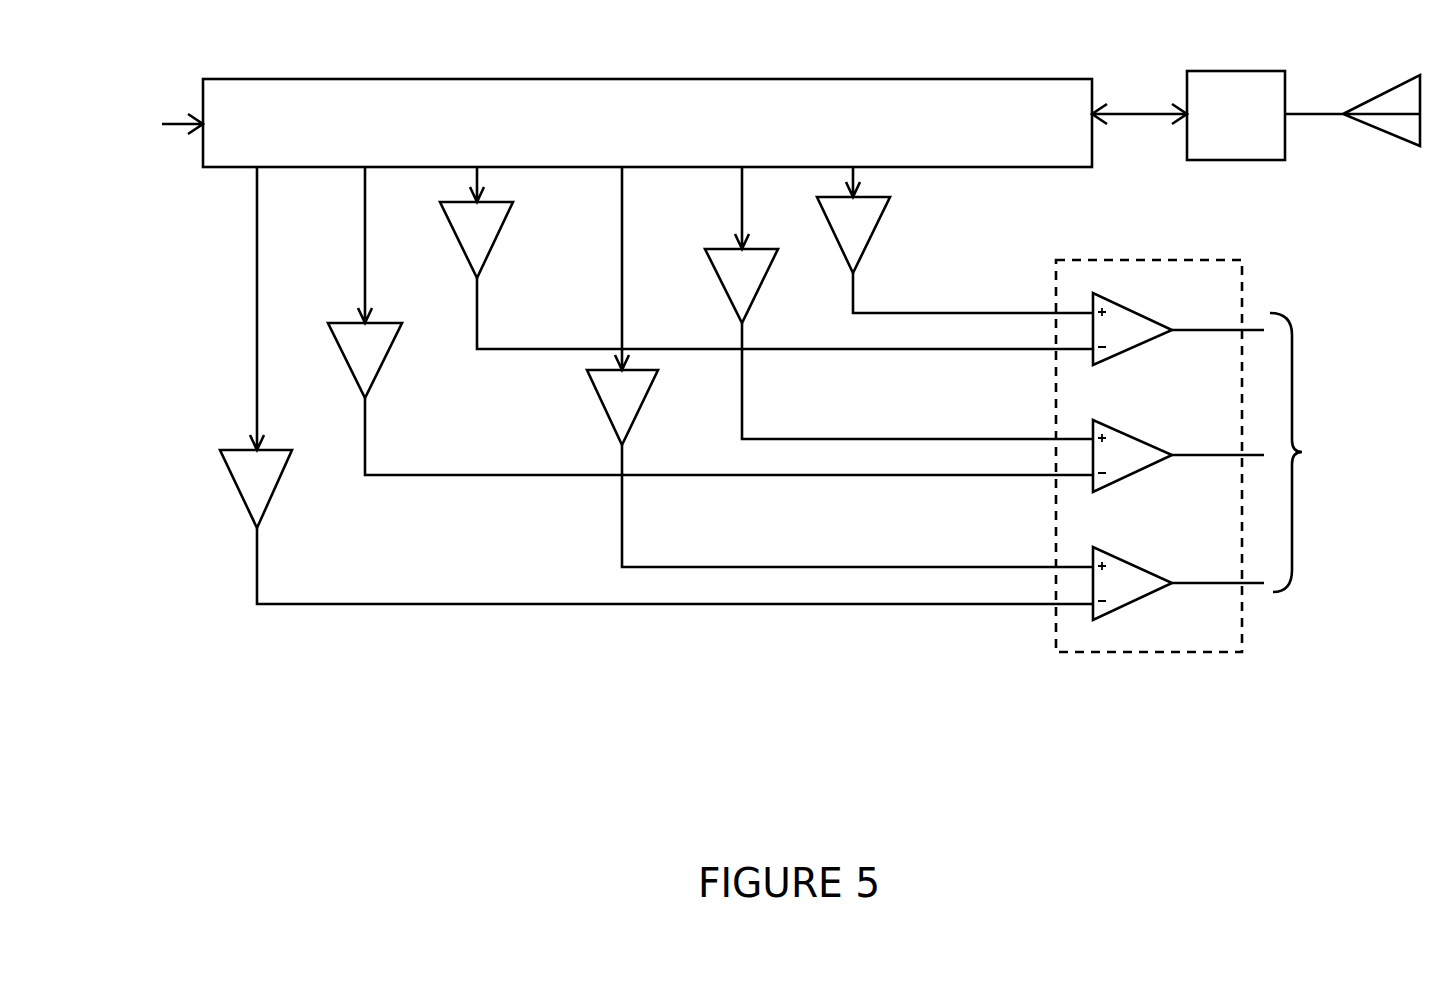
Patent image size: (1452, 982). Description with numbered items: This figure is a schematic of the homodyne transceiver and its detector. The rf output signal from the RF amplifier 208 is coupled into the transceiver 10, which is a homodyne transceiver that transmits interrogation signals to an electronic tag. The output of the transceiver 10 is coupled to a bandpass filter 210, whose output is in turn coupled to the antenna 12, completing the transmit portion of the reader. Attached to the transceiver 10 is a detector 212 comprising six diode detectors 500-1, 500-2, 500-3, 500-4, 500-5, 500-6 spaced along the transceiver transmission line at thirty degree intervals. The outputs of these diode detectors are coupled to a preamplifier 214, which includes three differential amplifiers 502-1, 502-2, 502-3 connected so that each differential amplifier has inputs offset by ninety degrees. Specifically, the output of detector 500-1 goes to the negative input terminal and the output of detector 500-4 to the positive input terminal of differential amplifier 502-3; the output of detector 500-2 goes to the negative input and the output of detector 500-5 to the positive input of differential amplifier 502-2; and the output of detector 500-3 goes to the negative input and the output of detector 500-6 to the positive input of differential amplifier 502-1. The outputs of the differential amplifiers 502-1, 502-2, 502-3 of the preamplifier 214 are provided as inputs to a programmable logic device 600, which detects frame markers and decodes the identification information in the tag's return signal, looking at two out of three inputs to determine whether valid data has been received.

The transceiver 10 is at (293, 79).
The RF amplifier 208 is at (150, 143).
The bandpass filter 210 is at (1220, 69).
The antenna 12 is at (1393, 80).
The diode detector 500-1 is at (656, 385).
The diode detector 500-2 is at (710, 321).
The diode detector 500-3 is at (766, 258).
The diode detector 500-4 is at (840, 367).
The diode detector 500-5 is at (899, 303).
The diode detector 500-6 is at (955, 240).
The detector 212 is at (235, 625).
The preamplifier 214 is at (1107, 665).
The differential amplifier 502-1 is at (1178, 324).
The differential amplifier 502-2 is at (1178, 451).
The differential amplifier 502-3 is at (1178, 579).
The programmable logic device 600 is at (1335, 452).